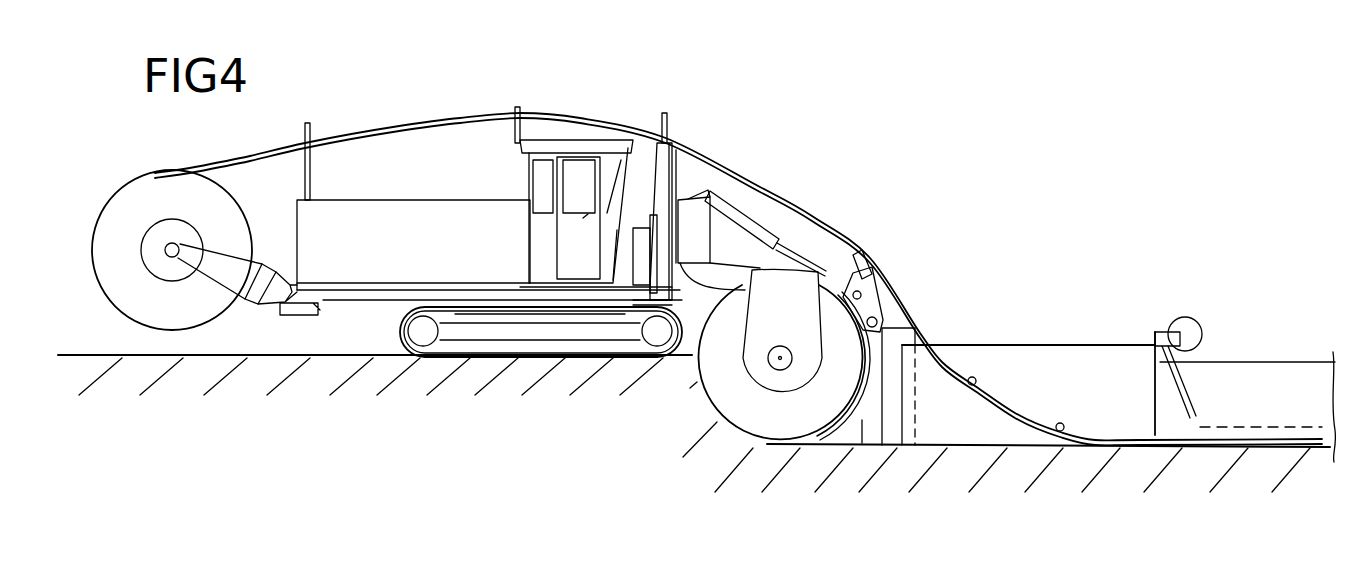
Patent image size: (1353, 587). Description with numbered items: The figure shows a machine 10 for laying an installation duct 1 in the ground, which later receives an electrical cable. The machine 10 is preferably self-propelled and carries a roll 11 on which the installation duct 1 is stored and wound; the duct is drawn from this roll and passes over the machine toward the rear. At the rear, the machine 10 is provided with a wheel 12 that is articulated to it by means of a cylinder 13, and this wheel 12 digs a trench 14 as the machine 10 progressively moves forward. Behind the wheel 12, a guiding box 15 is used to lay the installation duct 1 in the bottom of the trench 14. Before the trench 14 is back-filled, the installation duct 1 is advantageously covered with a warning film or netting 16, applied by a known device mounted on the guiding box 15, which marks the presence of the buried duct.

The installation duct 1 is at (428, 127).
The machine 10 is at (343, 318).
The roll 11 is at (107, 300).
The wheel 12 is at (763, 418).
The cylinder 13 is at (757, 217).
The trench 14 is at (862, 420).
The guiding box 15 is at (1054, 338).
The warning film or netting 16 is at (1205, 425).